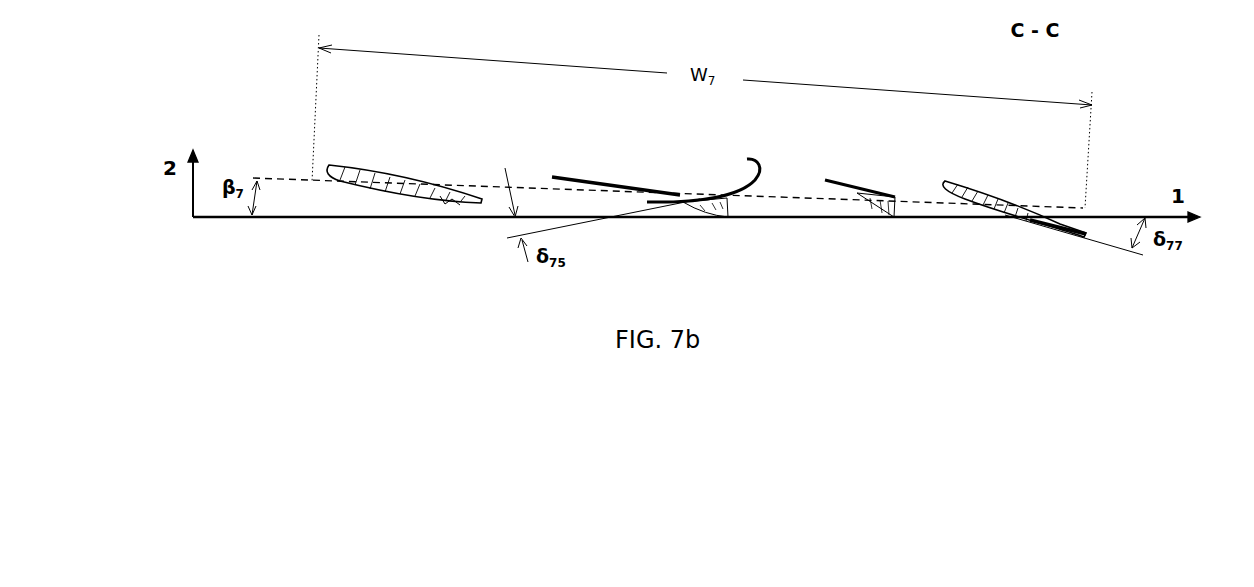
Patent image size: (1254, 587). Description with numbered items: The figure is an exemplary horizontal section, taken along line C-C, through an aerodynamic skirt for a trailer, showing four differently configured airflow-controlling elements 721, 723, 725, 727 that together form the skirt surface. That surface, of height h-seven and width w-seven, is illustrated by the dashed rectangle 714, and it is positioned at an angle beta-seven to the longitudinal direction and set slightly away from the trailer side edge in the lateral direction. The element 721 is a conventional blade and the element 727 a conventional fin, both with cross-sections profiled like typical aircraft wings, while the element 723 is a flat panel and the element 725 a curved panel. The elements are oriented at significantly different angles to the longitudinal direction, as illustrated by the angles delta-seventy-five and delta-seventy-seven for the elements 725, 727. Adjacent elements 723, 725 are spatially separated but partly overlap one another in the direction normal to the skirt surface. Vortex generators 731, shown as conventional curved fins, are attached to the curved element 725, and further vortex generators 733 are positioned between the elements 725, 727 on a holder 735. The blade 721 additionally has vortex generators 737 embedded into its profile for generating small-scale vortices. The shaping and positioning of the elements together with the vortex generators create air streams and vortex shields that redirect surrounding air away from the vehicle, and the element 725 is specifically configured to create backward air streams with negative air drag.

The skirt surface area 714 is at (1063, 208).
The airflow-controlling element 721 is at (373, 175).
The airflow-controlling element 723 is at (613, 182).
The airflow-controlling element 725 is at (743, 192).
The airflow-controlling element 727 is at (970, 187).
The vortex generators 731 is at (685, 203).
The vortex generators 733 is at (873, 207).
The holder 735 is at (838, 182).
The vortex generators 737 is at (463, 207).